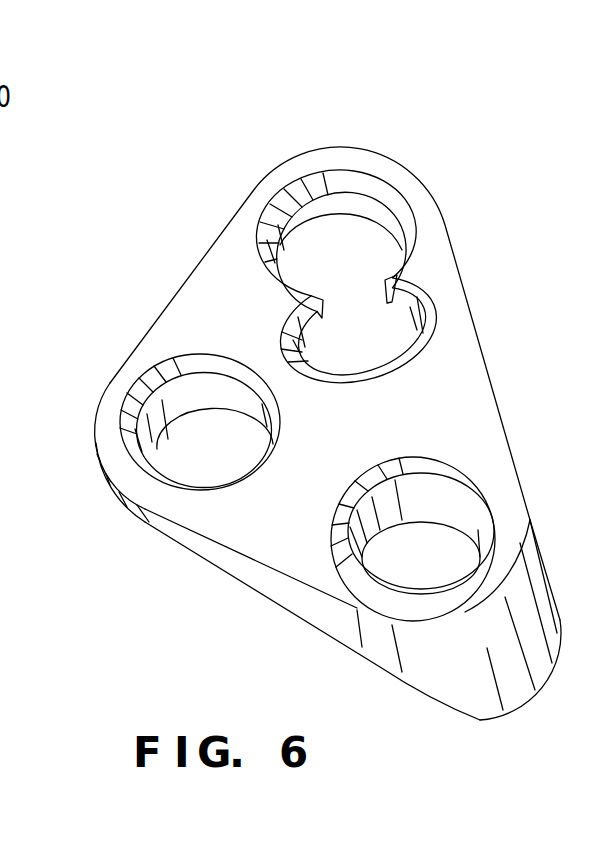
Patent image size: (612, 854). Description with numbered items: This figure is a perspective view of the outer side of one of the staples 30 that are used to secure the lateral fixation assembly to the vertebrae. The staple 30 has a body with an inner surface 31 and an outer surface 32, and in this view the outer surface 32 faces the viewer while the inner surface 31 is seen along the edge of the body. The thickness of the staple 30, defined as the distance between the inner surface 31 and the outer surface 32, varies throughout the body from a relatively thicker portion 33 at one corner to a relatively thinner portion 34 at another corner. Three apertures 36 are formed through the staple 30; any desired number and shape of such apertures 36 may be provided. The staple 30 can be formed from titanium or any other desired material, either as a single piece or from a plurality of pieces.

The staple 30 is at (447, 129).
The inner surface 31 is at (283, 606).
The outer surface 32 is at (438, 372).
The relatively thicker portion 33 is at (505, 647).
The relatively thinner portion 34 is at (92, 420).
The apertures 36 is at (368, 212).